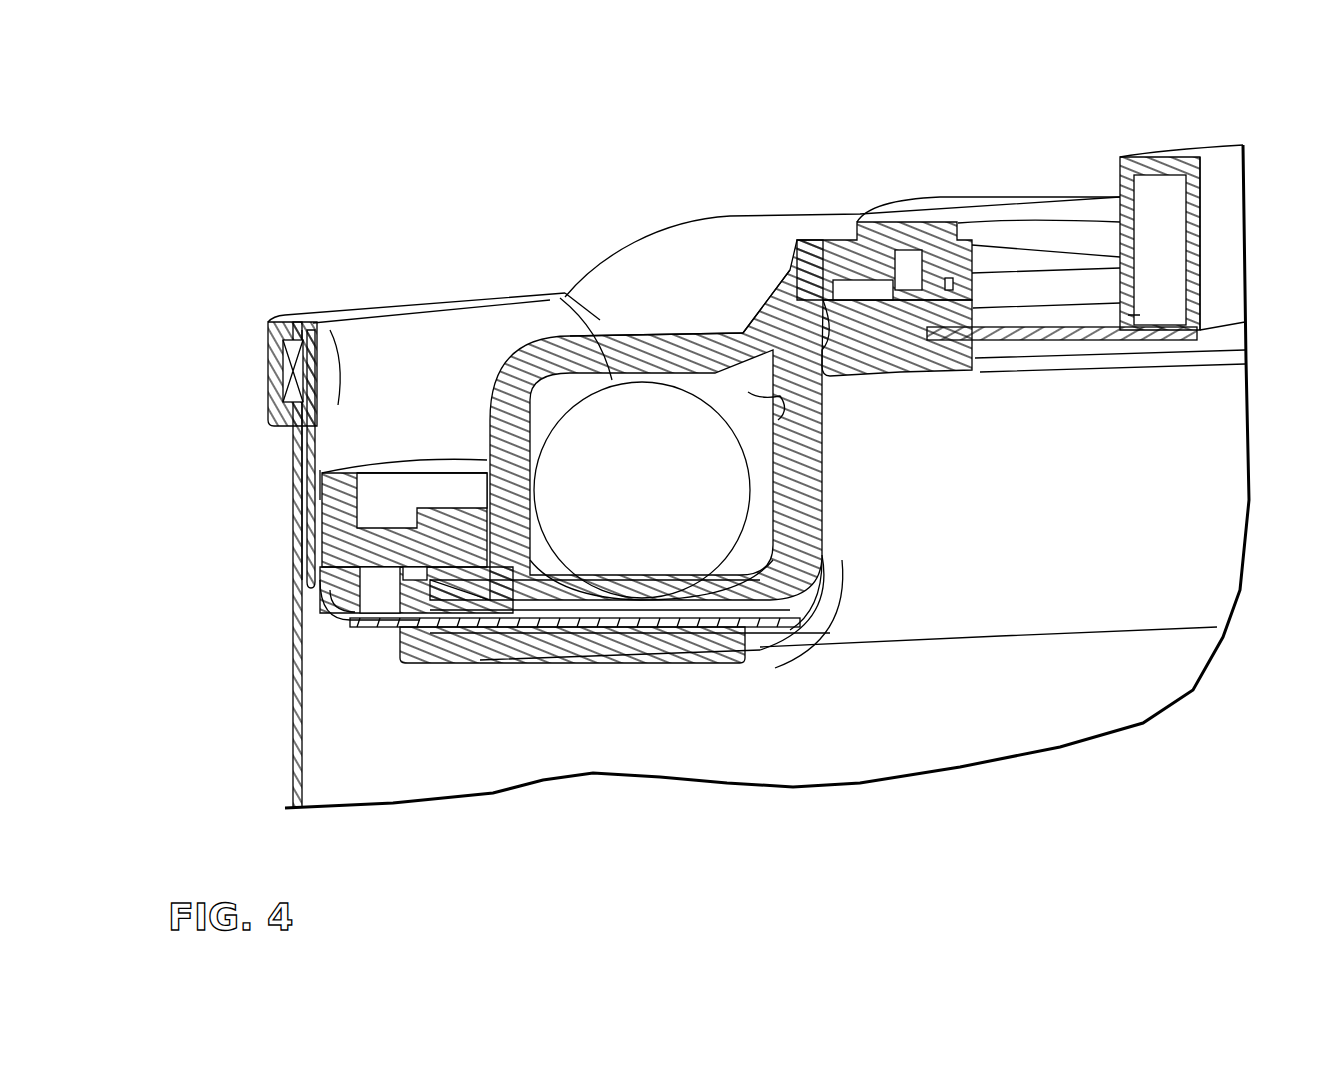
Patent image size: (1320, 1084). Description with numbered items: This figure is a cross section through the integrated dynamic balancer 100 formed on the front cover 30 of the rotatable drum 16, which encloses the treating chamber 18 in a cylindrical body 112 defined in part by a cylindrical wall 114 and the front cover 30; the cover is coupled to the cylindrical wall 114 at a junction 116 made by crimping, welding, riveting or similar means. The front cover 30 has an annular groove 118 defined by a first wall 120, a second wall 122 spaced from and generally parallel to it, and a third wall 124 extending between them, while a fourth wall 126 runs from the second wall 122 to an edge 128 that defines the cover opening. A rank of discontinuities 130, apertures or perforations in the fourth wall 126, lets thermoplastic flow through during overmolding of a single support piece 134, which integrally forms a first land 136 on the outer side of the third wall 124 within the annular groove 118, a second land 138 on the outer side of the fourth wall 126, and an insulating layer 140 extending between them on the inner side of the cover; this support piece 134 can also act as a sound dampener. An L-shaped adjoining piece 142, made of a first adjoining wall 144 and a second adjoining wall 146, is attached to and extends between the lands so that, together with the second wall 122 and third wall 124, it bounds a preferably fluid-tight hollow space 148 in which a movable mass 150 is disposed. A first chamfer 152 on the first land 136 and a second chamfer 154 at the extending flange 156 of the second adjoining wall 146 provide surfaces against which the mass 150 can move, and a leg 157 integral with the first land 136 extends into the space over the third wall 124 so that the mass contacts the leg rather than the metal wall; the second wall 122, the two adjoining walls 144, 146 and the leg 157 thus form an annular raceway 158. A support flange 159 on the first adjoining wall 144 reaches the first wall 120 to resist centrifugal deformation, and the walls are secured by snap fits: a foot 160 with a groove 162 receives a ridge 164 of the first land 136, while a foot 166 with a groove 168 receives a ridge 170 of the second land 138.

The integrated dynamic balancer 100 is at (597, 190).
The rotatable drum 16 is at (226, 630).
The treating chamber 18 is at (1025, 729).
The front cover 30 is at (1080, 345).
The cylindrical body 112 is at (290, 748).
The cylindrical wall 114 is at (292, 540).
The junction 116 is at (253, 385).
The annular groove 118 is at (485, 315).
The first wall 120 is at (338, 402).
The second wall 122 is at (707, 493).
The third wall 124 is at (502, 627).
The fourth wall 126 is at (1140, 340).
The edge 128 is at (1210, 190).
The rank of discontinuities 130 is at (912, 358).
The support piece 134 is at (750, 653).
The first land 136 is at (437, 605).
The second land 138 is at (975, 360).
The insulating layer 140 is at (795, 593).
The adjoining piece 142 is at (600, 276).
The first adjoining wall 144 is at (475, 355).
The second adjoining wall 146 is at (668, 360).
The hollow space 148 is at (692, 615).
The movable mass 150 is at (786, 561).
The first chamfer 152 is at (640, 602).
The second chamfer 154 is at (780, 400).
The extending flange 156 is at (780, 339).
The leg 157 is at (647, 627).
The annular raceway 158 is at (539, 384).
The support flange 159 is at (318, 492).
The foot 160 is at (415, 503).
The groove 162 is at (462, 560).
The ridge 164 is at (543, 595).
The foot 166 is at (890, 217).
The groove 168 is at (905, 260).
The ridge 170 is at (915, 270).